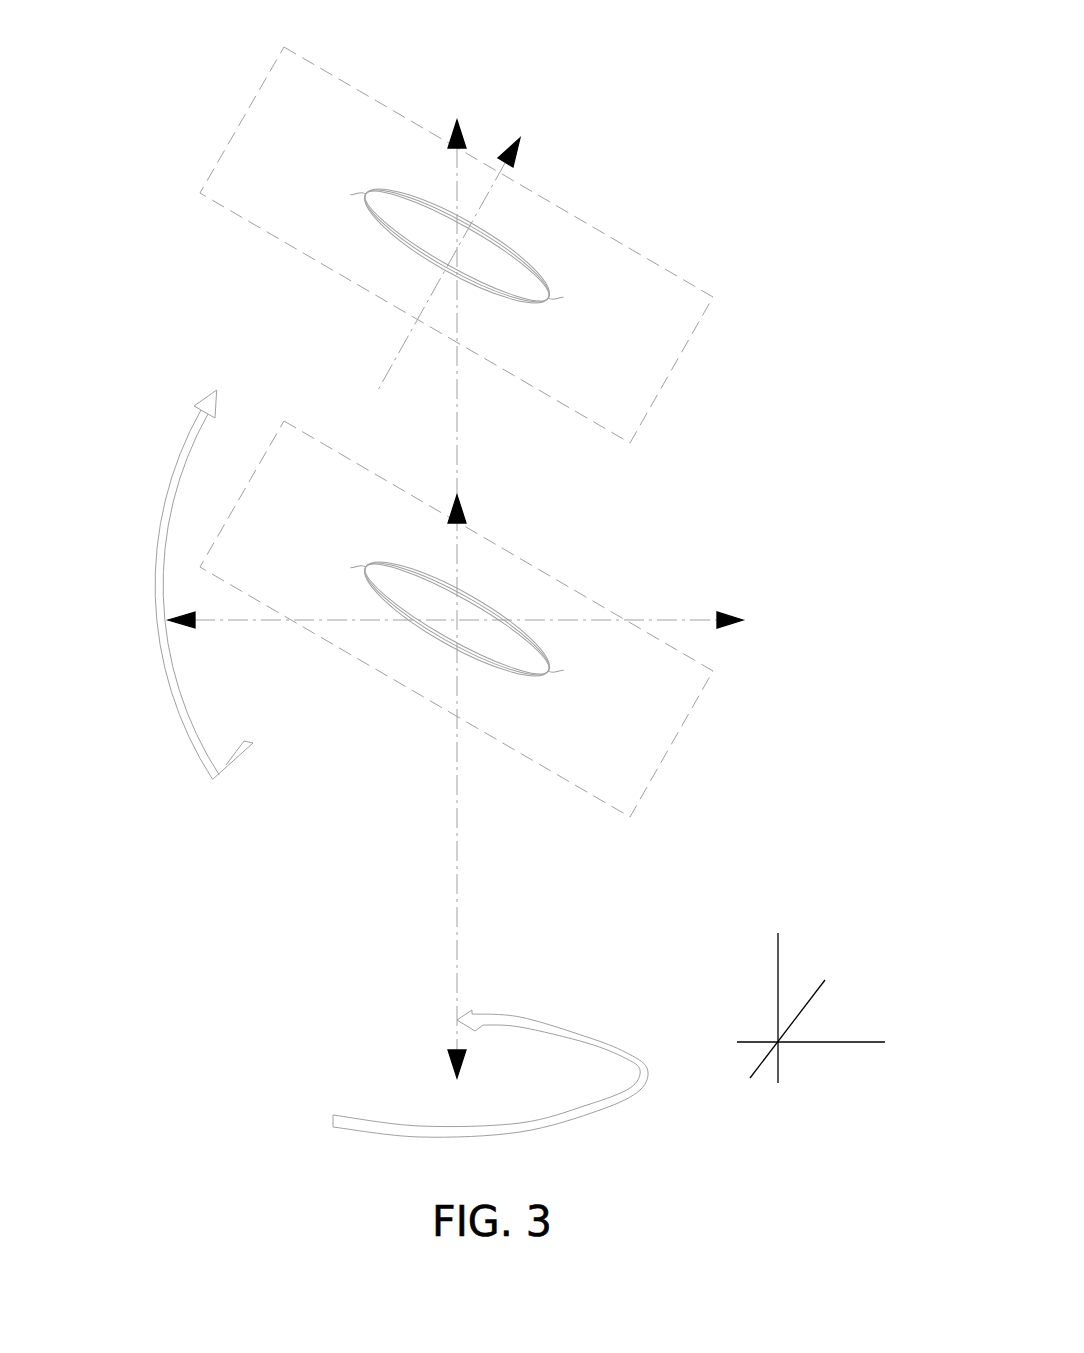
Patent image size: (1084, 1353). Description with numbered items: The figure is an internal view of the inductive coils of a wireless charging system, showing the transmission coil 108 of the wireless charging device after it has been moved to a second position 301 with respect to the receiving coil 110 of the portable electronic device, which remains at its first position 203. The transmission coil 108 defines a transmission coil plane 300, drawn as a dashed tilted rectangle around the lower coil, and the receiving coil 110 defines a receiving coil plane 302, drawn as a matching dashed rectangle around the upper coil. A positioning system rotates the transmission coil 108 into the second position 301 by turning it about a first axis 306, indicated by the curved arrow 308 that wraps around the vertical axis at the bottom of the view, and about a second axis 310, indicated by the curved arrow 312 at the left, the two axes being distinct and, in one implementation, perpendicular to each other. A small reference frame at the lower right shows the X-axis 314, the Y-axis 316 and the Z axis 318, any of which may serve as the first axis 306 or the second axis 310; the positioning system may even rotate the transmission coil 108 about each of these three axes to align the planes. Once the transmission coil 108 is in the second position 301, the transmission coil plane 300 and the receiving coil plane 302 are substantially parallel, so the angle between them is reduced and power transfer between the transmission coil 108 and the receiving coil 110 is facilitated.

The transmission coil 108 is at (556, 677).
The receiving coil 110 is at (556, 303).
The first position 203 is at (484, 245).
The transmission coil plane 300 is at (688, 715).
The second position 301 is at (487, 619).
The receiving coil plane 302 is at (688, 344).
The first axis 306 is at (458, 824).
The arrow 308 is at (648, 1074).
The second axis 310 is at (226, 623).
The arrow 312 is at (161, 503).
The X-axis 314 is at (850, 1042).
The Y-axis 316 is at (813, 993).
The Z axis 318 is at (777, 952).